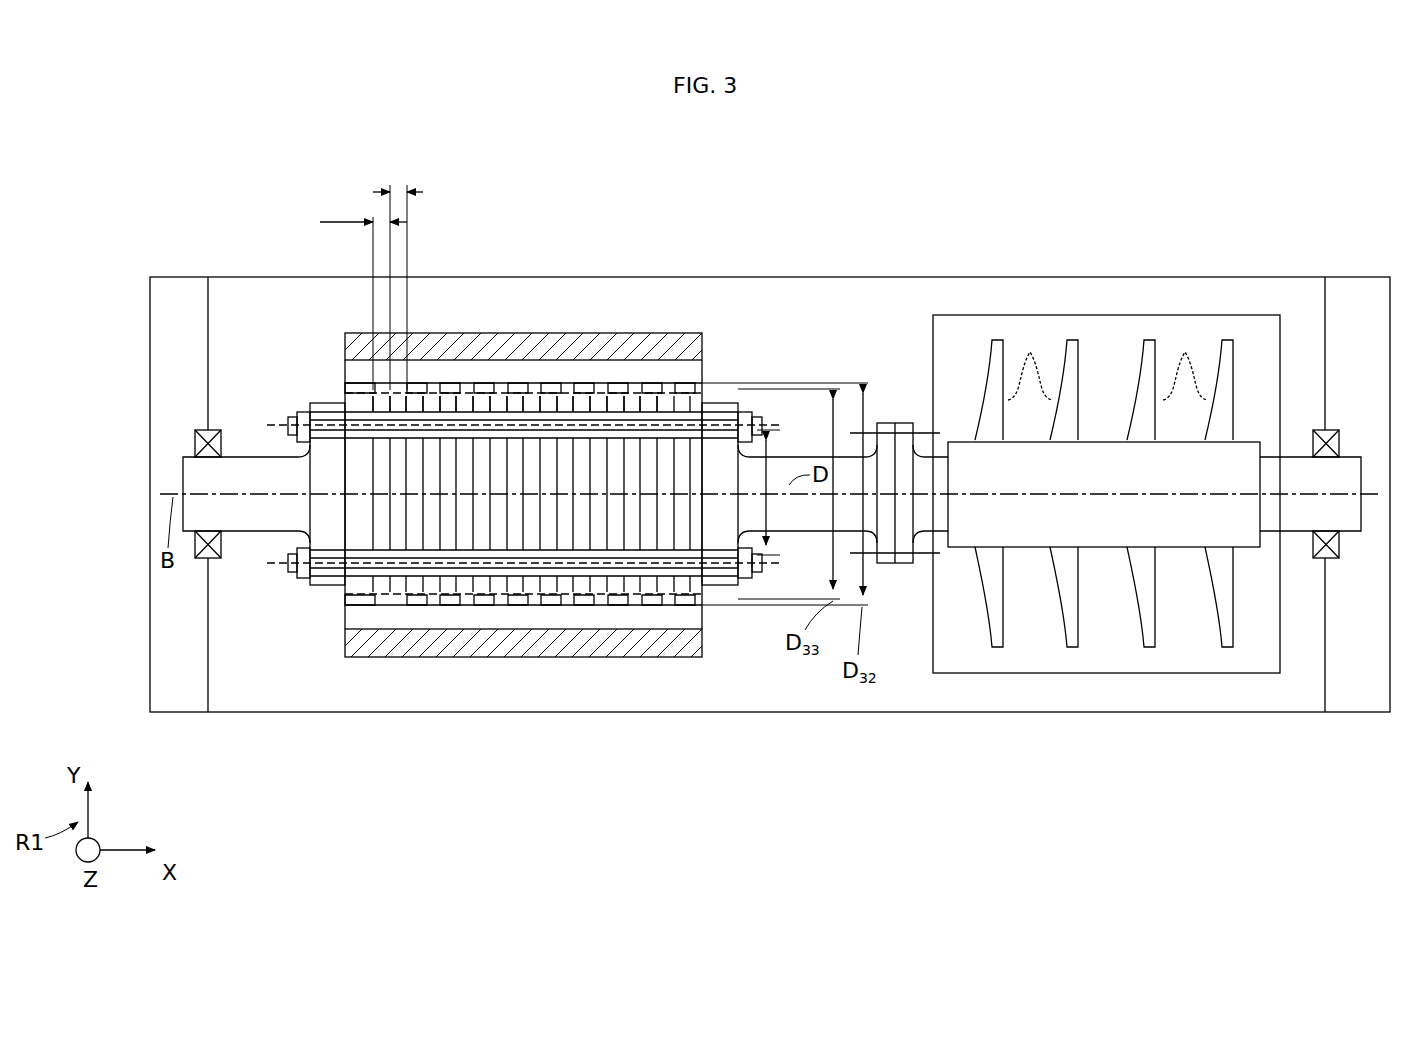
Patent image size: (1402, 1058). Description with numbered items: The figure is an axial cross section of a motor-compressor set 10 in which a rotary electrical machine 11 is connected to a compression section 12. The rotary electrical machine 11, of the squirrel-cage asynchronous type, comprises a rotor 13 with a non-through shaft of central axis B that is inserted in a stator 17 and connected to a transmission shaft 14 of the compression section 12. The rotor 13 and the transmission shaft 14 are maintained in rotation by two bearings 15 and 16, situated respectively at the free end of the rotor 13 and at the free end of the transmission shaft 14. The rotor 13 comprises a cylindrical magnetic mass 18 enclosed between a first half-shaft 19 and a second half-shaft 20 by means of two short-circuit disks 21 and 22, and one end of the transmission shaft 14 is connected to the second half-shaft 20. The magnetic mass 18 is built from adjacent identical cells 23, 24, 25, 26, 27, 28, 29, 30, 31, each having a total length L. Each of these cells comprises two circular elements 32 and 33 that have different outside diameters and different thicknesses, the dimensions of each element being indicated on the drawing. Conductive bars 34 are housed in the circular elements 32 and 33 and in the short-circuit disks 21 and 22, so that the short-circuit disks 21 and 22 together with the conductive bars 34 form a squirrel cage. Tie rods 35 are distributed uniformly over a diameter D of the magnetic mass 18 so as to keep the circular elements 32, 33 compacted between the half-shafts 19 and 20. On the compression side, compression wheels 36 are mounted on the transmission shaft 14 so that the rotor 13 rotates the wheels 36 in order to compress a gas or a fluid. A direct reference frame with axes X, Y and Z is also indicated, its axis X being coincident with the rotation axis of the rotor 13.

The motor-compressor set 10 is at (951, 261).
The rotary electrical machine 11 is at (523, 495).
The compression section 12 is at (1106, 454).
The rotor 13 is at (273, 383).
The transmission shaft 14 is at (1290, 438).
The bearing 15 is at (218, 543).
The bearing 16 is at (1318, 560).
The stator 17 is at (530, 332).
The cylindrical magnetic mass 18 is at (587, 372).
The first half-shaft 19 is at (237, 437).
The second half-shaft 20 is at (550, 408).
The short-circuit disk 21 is at (343, 392).
The short-circuit disk 22 is at (720, 402).
The cell 23 is at (373, 725).
The cell 24 is at (406, 725).
The cell 25 is at (440, 725).
The cell 26 is at (507, 725).
The cell 27 is at (507, 725).
The cell 28 is at (540, 725).
The cell 29 is at (574, 725).
The cell 30 is at (641, 725).
The cell 31 is at (641, 725).
The circular element 32 is at (377, 390).
The circular element 33 is at (407, 387).
The conductive bars 34 is at (340, 593).
The tie rods 35 is at (308, 410).
The compression wheels 36 is at (1050, 395).